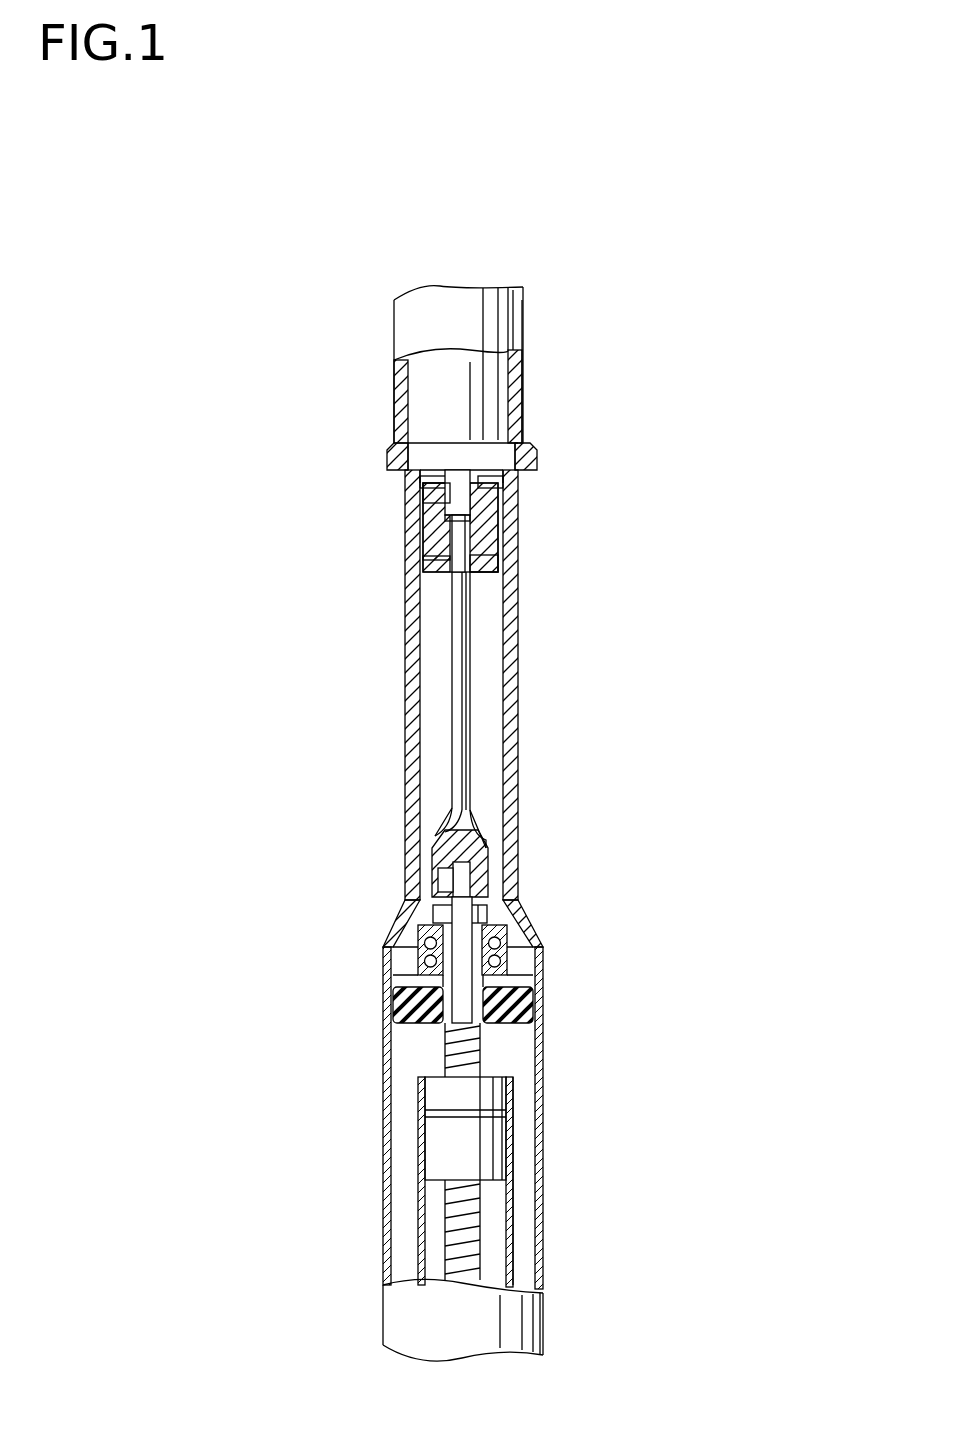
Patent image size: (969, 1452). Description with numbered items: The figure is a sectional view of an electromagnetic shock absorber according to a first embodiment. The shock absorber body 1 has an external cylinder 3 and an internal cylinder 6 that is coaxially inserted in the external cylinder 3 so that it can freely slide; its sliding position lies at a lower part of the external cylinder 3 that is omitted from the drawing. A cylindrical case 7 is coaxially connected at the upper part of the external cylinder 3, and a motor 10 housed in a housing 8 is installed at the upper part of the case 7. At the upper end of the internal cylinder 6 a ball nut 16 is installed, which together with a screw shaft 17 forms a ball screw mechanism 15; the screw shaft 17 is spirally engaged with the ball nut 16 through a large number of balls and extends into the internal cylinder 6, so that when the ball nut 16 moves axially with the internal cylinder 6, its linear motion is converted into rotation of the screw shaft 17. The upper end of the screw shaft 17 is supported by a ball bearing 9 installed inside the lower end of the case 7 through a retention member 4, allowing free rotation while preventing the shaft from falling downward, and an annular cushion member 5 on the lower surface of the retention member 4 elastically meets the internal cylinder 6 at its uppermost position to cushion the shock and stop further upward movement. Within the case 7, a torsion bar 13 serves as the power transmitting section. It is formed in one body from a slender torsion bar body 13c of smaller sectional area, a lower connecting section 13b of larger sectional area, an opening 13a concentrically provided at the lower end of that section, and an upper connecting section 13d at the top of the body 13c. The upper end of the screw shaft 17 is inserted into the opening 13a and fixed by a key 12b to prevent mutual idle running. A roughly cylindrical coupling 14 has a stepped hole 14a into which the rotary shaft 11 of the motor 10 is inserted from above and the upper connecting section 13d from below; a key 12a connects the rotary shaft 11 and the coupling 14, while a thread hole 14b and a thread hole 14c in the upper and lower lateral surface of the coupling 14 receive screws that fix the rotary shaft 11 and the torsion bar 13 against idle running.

The shock absorber body 1 is at (378, 1224).
The external cylinder 3 is at (543, 1108).
The retention member 4 is at (395, 947).
The annular cushion member 5 is at (540, 1005).
The internal cylinder 6 is at (513, 1237).
The cylindrical case 7 is at (518, 647).
The housing 8 is at (522, 378).
The ball bearing 9 is at (418, 938).
The motor 10 is at (420, 400).
The rotary shaft 11 is at (517, 477).
The key 12a is at (425, 480).
The key 12b is at (440, 883).
The torsion bar 13 is at (478, 700).
The opening 13a is at (445, 845).
The lower connecting section 13b is at (488, 862).
The torsion bar body 13c is at (445, 618).
The upper connecting section 13d is at (500, 555).
The coupling 14 is at (430, 547).
The stepped hole 14a is at (465, 523).
The thread hole 14b is at (430, 502).
The thread hole 14c is at (432, 565).
The ball screw mechanism 15 is at (518, 1150).
The ball nut 16 is at (432, 1140).
The screw shaft 17 is at (445, 1045).